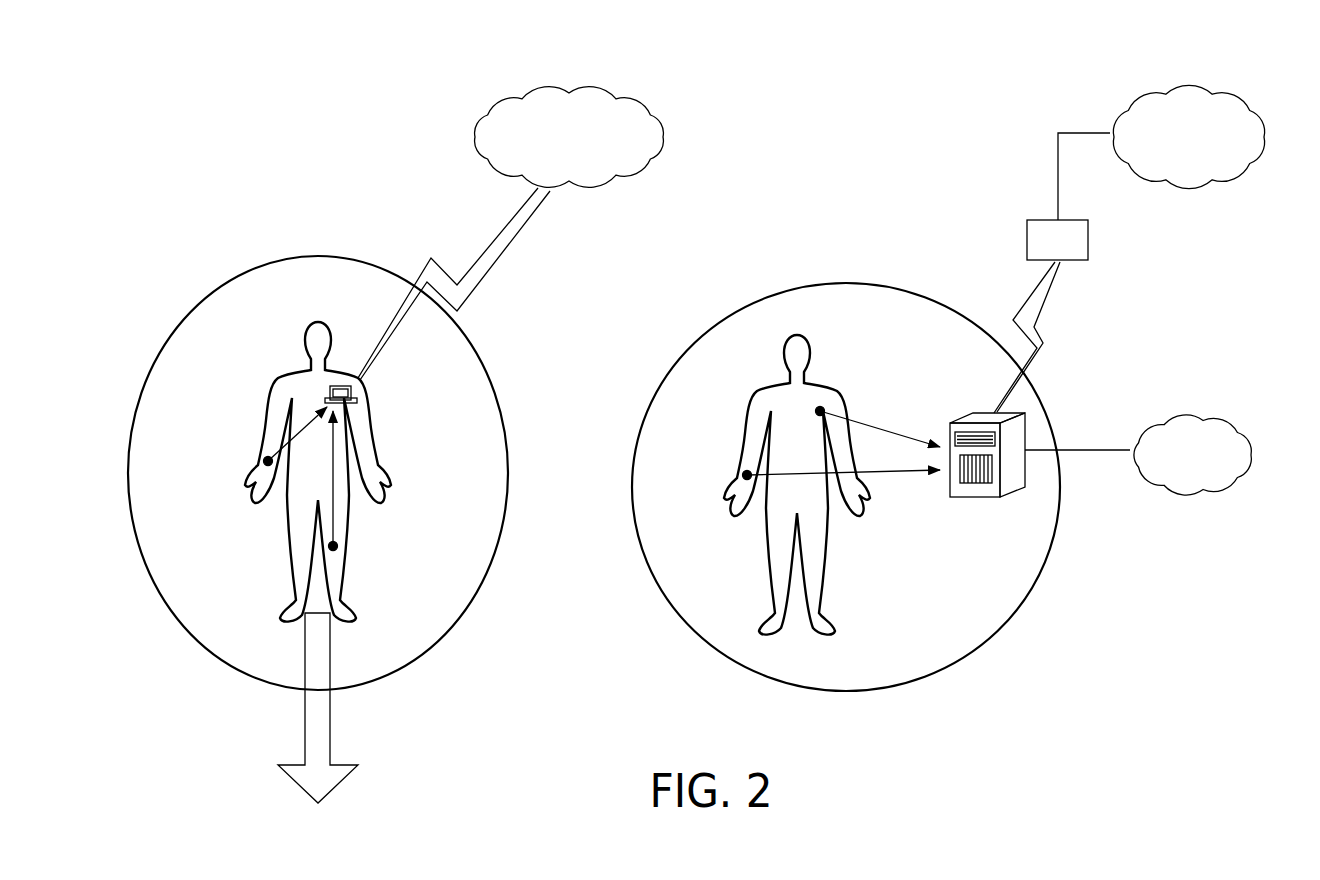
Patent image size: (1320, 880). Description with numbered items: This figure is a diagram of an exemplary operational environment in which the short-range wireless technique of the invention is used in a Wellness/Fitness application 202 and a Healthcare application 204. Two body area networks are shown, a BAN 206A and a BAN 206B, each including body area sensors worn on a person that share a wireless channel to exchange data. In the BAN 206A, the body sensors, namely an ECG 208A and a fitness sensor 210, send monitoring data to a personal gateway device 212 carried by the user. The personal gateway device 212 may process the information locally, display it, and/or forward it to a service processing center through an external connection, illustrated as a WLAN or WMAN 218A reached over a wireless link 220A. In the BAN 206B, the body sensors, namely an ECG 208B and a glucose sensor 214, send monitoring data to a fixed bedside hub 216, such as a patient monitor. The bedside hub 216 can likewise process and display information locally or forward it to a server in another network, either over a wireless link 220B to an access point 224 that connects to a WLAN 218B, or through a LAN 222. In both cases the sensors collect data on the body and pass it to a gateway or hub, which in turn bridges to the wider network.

The Wellness/Fitness application 202 is at (430, 650).
The Healthcare application 204 is at (968, 655).
The BAN 206A is at (345, 311).
The BAN 206B is at (875, 342).
The ECG 208A is at (266, 460).
The ECG 208B is at (822, 410).
The fitness sensor 210 is at (336, 546).
The personal gateway device 212 is at (357, 394).
The glucose sensor 214 is at (745, 478).
The bedside hub 216 is at (975, 497).
The WLAN or WMAN 218A is at (467, 138).
The WLAN 218B is at (1133, 97).
The wireless link 220A is at (485, 250).
The wireless link 220B is at (1045, 324).
The LAN 222 is at (1197, 493).
The access point 224 is at (1027, 238).